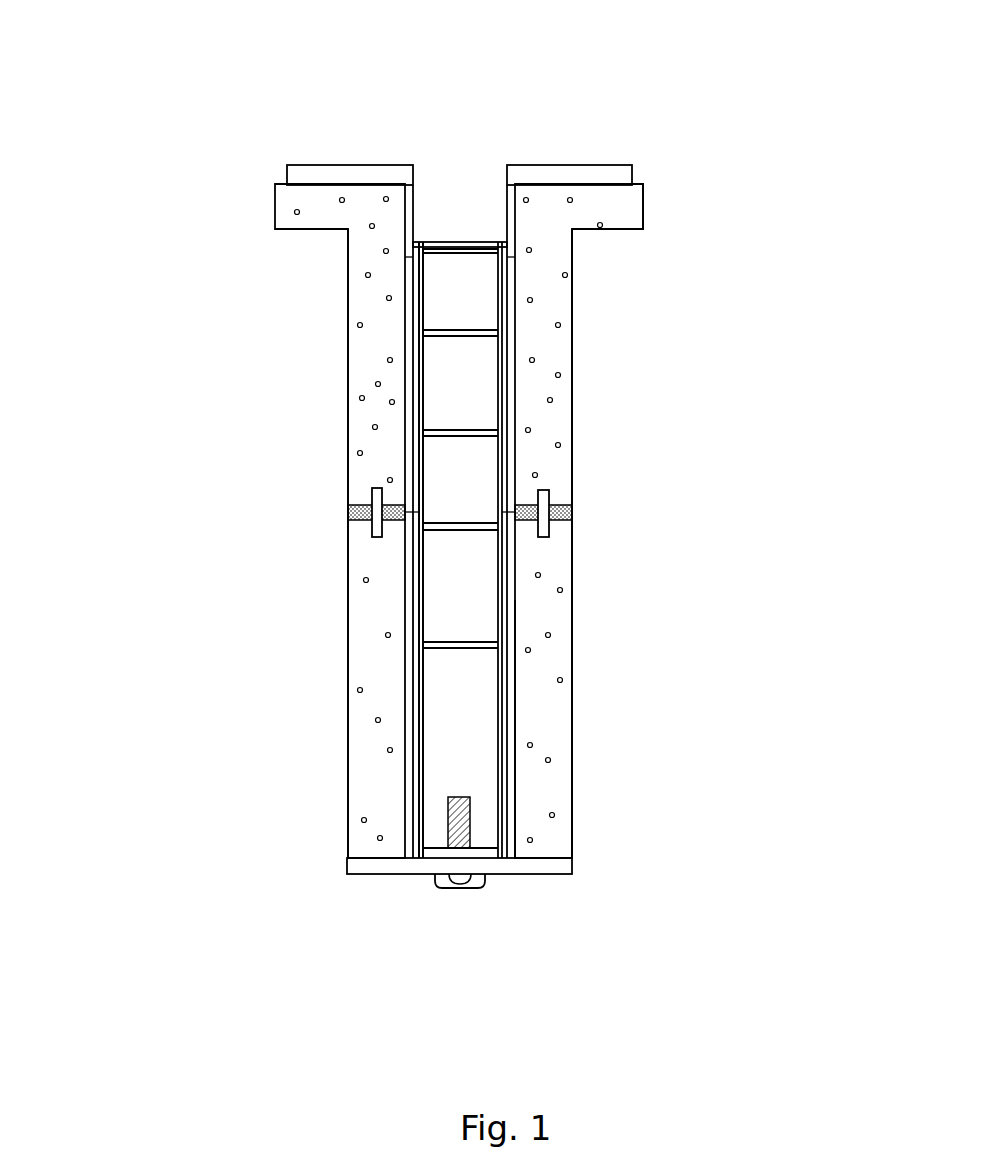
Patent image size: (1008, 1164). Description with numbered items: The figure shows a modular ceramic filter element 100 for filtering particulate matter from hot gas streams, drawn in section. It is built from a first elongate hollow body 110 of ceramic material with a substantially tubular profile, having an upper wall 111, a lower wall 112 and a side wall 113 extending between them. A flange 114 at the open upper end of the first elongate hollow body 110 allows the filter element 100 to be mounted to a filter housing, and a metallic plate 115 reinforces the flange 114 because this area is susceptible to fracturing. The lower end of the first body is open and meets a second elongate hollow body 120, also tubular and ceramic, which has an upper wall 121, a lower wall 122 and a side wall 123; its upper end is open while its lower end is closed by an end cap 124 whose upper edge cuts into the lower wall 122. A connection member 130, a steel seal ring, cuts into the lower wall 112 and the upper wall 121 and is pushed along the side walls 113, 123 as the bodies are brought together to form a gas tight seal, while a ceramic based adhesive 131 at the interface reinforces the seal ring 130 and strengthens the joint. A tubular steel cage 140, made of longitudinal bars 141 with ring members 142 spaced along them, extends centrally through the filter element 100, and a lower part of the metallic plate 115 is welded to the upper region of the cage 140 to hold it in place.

The modular filter element 100 is at (210, 122).
The first elongate hollow body 110 is at (642, 403).
The upper wall 111 is at (598, 193).
The lower wall 112 is at (355, 498).
The side wall 113 is at (573, 350).
The flange 114 is at (287, 206).
The metallic plate 115 is at (562, 173).
The second elongate hollow body 120 is at (653, 743).
The upper wall 121 is at (562, 523).
The lower wall 122 is at (545, 858).
The side wall 123 is at (347, 713).
The end cap 124 is at (420, 867).
The connection member 130 is at (550, 493).
The ceramic based adhesive 131 is at (349, 517).
The tubular steel cage 140 is at (463, 232).
The longitudinal bars 141 is at (417, 280).
The ring members 142 is at (472, 247).